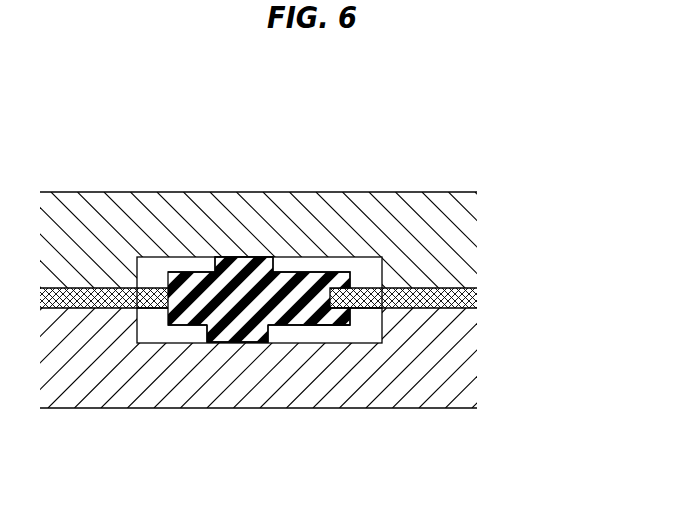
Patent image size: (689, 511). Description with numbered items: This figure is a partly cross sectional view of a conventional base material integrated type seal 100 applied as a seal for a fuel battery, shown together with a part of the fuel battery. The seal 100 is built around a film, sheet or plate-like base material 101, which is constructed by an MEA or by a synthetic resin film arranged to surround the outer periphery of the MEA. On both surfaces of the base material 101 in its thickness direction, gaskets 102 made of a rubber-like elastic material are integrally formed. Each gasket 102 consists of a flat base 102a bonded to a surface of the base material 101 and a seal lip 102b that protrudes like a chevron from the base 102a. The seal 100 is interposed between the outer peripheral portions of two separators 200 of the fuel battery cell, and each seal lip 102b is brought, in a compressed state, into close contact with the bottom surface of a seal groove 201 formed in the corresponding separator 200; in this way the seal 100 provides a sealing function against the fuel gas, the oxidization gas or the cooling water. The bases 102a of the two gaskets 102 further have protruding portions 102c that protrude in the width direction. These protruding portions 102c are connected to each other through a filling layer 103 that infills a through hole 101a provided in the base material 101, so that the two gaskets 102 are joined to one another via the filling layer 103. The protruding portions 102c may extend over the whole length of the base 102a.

The base material integrated type seal 100 is at (360, 268).
The base material 101 is at (477, 297).
The through hole 101a is at (298, 328).
The gasket 102 is at (207, 270).
The base 102a is at (168, 272).
The seal lip 102b is at (218, 257).
The protruding portion 102c is at (317, 272).
The filling layer 103 is at (323, 328).
The separator 200 is at (435, 233).
The seal groove 201 is at (285, 262).